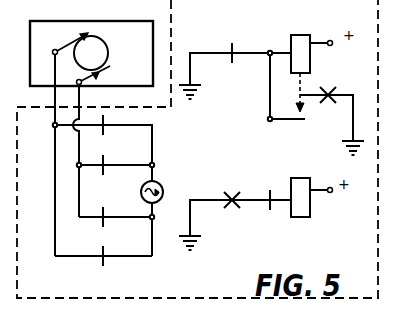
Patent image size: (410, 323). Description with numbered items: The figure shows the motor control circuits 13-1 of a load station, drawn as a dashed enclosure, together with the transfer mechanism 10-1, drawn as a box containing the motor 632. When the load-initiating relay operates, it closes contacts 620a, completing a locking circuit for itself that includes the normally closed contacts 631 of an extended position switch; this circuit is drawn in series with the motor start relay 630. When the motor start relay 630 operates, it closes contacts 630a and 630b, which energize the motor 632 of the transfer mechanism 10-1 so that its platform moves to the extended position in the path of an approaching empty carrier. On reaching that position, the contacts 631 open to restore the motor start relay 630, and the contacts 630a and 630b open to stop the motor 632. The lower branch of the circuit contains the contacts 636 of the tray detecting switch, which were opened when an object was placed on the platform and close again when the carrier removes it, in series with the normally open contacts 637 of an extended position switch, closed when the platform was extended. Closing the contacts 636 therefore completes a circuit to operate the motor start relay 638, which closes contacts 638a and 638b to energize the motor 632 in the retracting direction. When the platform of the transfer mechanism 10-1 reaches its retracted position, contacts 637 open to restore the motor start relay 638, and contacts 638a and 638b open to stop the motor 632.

The transfer mechanism 10-1 is at (103, 21).
The motor 632 is at (106, 45).
The motor control circuits 13-1 is at (302, 300).
The contacts 638a is at (106, 127).
The contacts 630a is at (104, 160).
The contacts 638b is at (104, 215).
The contacts 630b is at (104, 258).
The contacts 620a is at (234, 50).
The motor start relay 630 is at (298, 35).
The normally closed contacts 631 is at (328, 92).
The contacts 636 is at (231, 193).
The normally open contacts 637 is at (267, 208).
The motor start relay 638 is at (298, 178).